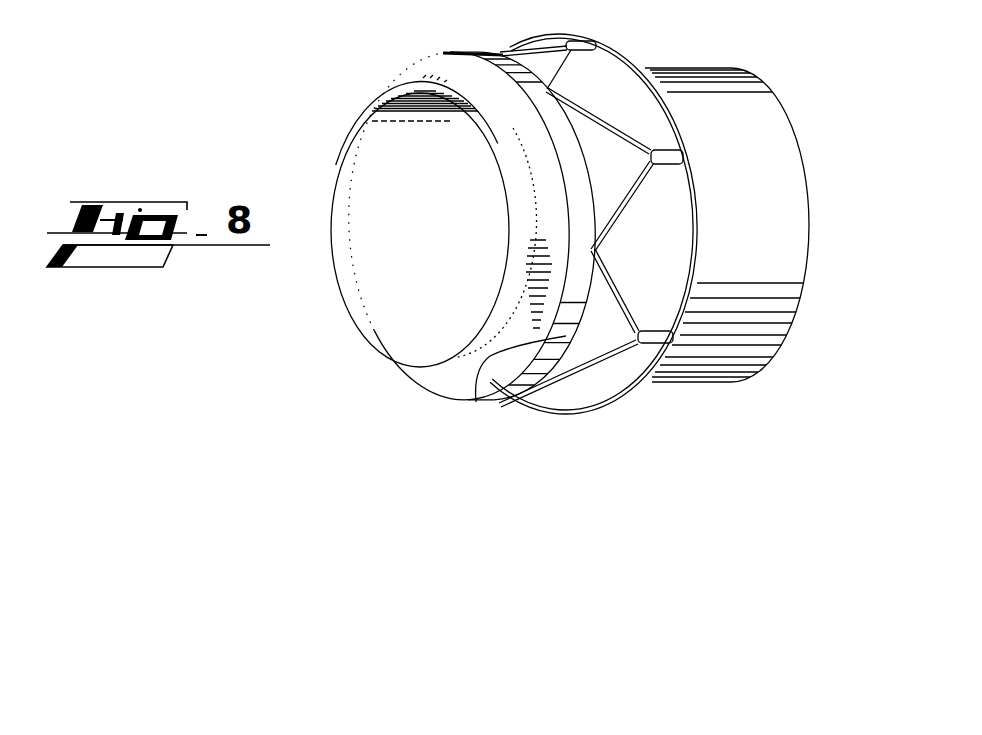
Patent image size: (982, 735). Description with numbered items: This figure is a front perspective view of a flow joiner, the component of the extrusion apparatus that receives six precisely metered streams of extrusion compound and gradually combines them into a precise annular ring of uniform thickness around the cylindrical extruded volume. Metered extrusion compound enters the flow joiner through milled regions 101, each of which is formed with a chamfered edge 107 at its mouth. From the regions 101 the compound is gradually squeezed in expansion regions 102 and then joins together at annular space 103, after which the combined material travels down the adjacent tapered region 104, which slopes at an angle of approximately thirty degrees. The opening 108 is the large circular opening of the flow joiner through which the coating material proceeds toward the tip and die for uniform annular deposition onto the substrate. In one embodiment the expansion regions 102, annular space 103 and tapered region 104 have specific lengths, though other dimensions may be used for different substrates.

The regions 101 is at (683, 120).
The expansion regions 102 is at (607, 147).
The annular space 103 is at (477, 400).
The tapered region 104 is at (450, 380).
The chamfered edge 107 is at (657, 358).
The opening 108 is at (440, 233).